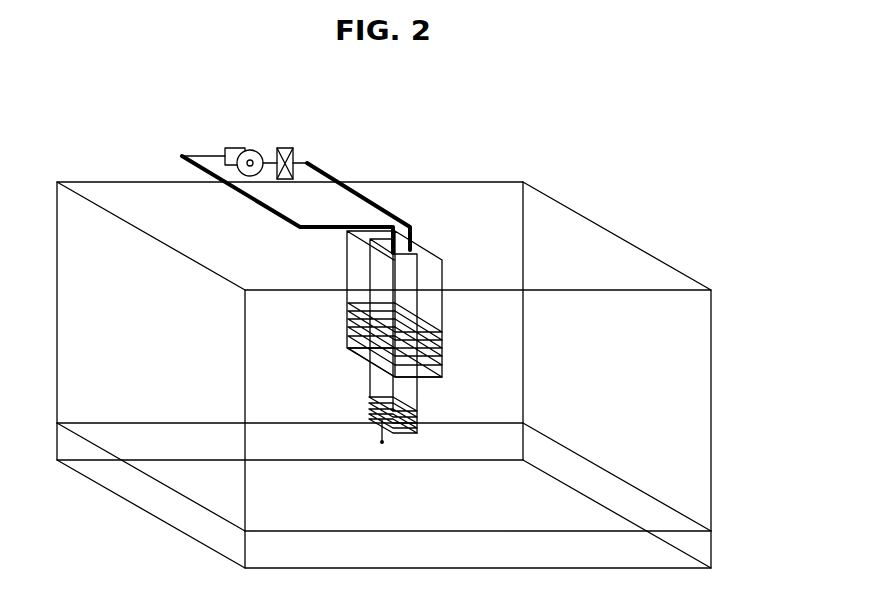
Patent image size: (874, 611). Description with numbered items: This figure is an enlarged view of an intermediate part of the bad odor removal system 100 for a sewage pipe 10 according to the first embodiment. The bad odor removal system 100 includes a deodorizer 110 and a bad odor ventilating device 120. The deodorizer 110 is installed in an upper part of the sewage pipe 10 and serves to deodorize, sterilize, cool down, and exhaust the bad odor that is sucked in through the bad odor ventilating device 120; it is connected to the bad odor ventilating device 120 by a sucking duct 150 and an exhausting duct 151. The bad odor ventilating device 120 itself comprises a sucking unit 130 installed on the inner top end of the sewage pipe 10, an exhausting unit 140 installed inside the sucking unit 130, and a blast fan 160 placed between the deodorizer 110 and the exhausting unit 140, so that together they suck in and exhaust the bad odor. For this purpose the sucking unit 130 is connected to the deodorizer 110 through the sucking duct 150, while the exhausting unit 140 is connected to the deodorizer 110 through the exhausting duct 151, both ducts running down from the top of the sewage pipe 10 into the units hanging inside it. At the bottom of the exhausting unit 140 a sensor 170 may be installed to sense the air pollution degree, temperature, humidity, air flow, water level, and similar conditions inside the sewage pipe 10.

The bad odor removal system 100 is at (111, 86).
The sewage pipe 10 is at (583, 215).
The deodorizer 110 is at (285, 147).
The bad odor ventilating device 120 is at (568, 349).
The sucking unit 130 is at (443, 347).
The exhausting unit 140 is at (418, 398).
The sucking duct 150 is at (380, 202).
The exhausting duct 151 is at (262, 205).
The blast fan 160 is at (236, 147).
The sensor 170 is at (382, 442).